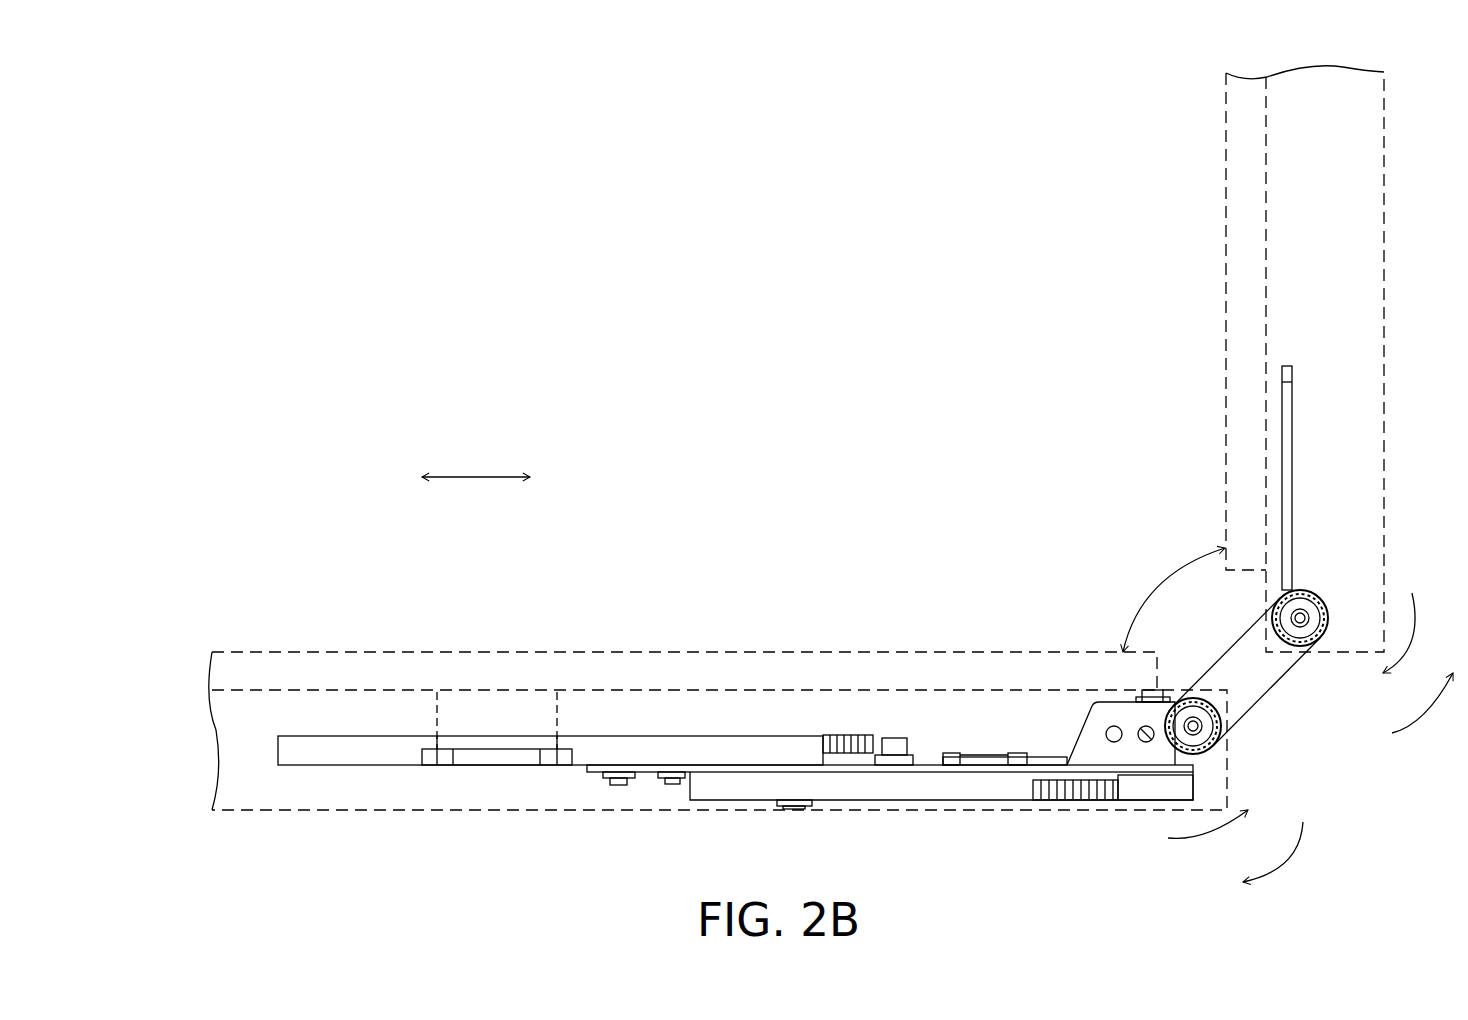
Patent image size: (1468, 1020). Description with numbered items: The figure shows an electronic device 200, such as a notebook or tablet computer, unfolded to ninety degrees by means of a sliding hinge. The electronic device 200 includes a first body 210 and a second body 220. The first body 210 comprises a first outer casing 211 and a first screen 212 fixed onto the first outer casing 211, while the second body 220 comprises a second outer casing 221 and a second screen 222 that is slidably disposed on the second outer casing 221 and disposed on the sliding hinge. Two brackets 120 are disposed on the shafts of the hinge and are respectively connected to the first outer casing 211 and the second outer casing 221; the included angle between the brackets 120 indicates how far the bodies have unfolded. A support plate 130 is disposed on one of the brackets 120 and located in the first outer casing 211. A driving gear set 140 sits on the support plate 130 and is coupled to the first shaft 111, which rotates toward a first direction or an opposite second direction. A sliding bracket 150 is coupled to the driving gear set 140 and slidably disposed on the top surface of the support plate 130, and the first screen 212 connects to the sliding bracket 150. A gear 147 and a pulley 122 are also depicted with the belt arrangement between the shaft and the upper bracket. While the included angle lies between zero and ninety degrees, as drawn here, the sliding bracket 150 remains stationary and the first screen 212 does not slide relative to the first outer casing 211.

The electronic device 200 is at (1417, 893).
The first body 210 is at (140, 665).
The first outer casing 211 is at (227, 715).
The first screen 212 is at (227, 670).
The second body 220 is at (1137, 105).
The second outer casing 221 is at (1282, 125).
The second screen 222 is at (1243, 157).
The bracket 120 is at (1288, 432).
The second pulley 122 is at (1302, 620).
The first shaft 111 is at (1193, 726).
The support plate 130 is at (893, 785).
The driving gear set 140 is at (1083, 802).
The gear 147 is at (853, 740).
The sliding bracket 150 is at (345, 758).